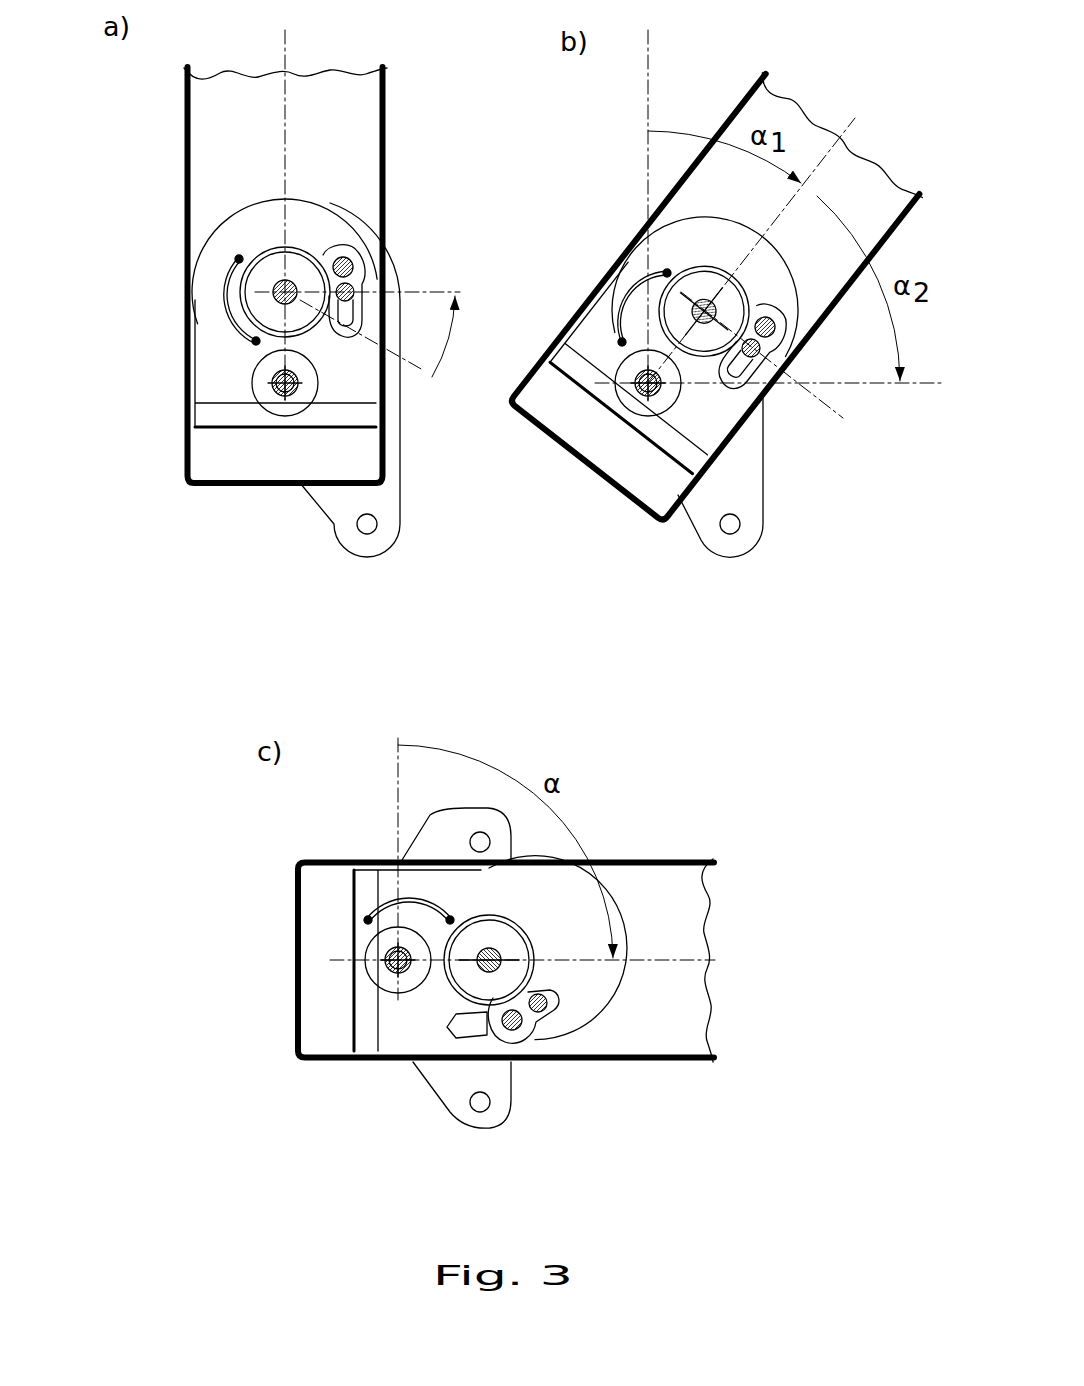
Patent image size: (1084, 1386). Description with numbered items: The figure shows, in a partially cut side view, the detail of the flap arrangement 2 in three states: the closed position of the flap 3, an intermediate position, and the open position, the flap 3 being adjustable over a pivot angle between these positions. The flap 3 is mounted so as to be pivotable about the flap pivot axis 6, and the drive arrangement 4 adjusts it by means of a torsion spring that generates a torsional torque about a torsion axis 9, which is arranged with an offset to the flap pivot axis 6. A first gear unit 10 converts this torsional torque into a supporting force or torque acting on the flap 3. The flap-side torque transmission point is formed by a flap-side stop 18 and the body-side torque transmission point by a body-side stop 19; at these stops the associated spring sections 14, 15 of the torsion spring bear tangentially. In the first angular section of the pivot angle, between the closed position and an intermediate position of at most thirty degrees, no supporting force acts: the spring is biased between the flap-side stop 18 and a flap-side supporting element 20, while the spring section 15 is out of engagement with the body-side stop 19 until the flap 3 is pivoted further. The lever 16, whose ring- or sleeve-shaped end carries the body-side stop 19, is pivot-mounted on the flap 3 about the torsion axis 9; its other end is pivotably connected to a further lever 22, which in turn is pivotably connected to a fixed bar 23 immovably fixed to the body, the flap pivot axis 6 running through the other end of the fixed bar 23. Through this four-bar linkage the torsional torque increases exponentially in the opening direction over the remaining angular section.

The flap arrangement 2 is at (148, 82).
The flap 3 is at (215, 142).
The drive arrangement 4 is at (148, 442).
The flap pivot axis 6 is at (283, 388).
The torsion axis 9 is at (283, 294).
The first gear unit 10 is at (222, 368).
The spring section 14 is at (350, 262).
The spring section 15 is at (352, 290).
The lever 16 is at (248, 237).
The flap-side stop 18 is at (322, 232).
The body-side stop 19 is at (348, 356).
The flap-side supporting element 20 is at (360, 307).
The further lever 22 is at (236, 266).
The fixed bar 23 is at (262, 392).